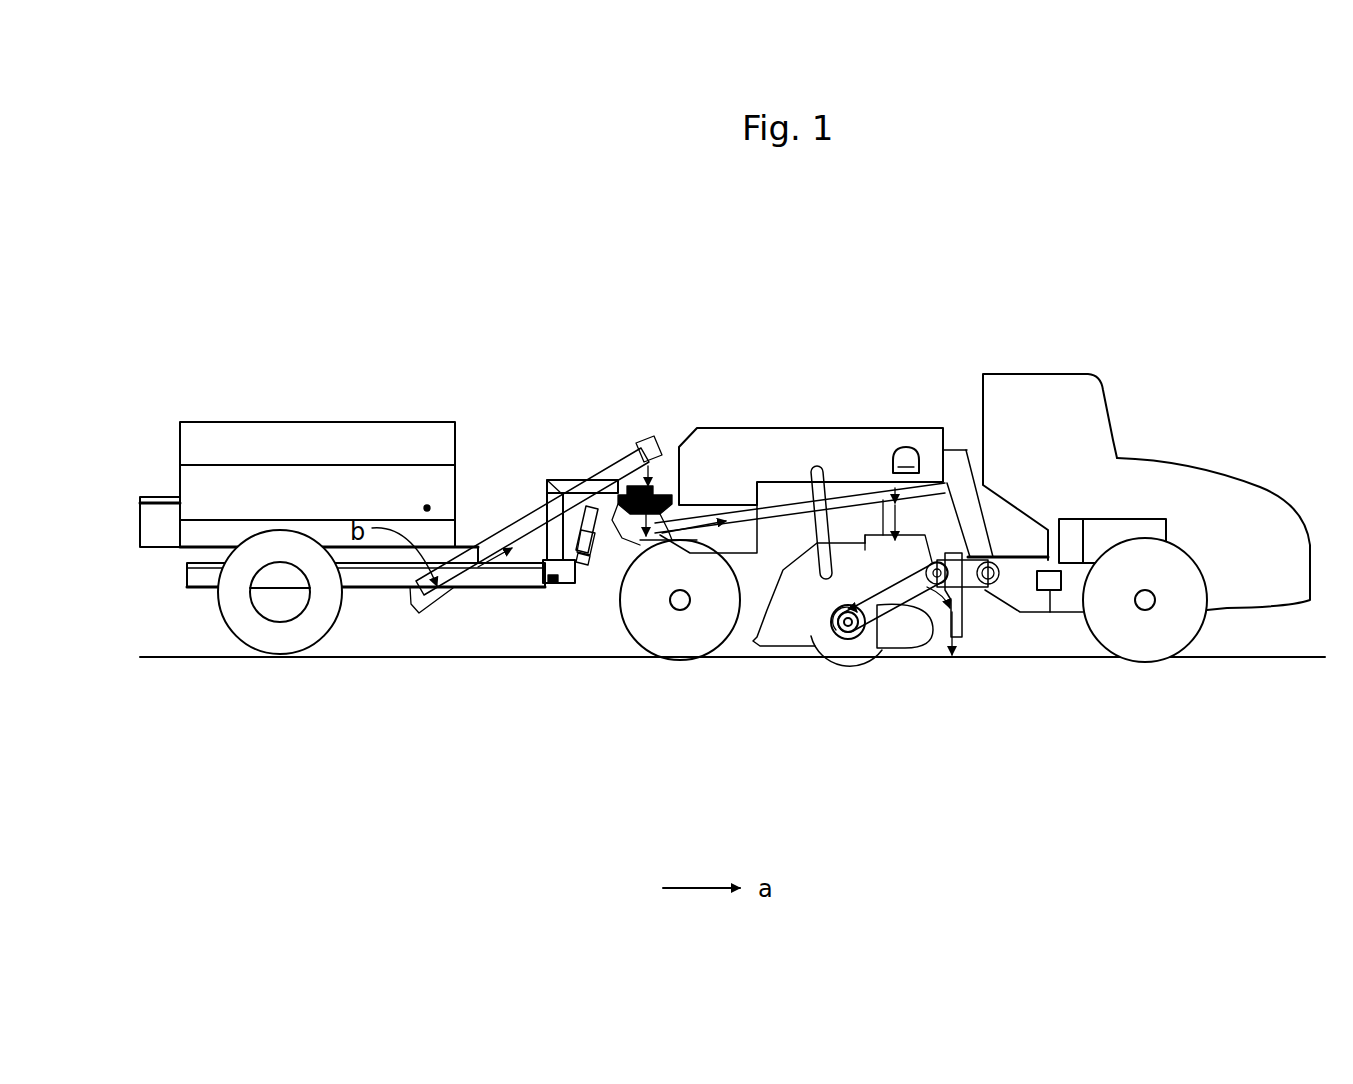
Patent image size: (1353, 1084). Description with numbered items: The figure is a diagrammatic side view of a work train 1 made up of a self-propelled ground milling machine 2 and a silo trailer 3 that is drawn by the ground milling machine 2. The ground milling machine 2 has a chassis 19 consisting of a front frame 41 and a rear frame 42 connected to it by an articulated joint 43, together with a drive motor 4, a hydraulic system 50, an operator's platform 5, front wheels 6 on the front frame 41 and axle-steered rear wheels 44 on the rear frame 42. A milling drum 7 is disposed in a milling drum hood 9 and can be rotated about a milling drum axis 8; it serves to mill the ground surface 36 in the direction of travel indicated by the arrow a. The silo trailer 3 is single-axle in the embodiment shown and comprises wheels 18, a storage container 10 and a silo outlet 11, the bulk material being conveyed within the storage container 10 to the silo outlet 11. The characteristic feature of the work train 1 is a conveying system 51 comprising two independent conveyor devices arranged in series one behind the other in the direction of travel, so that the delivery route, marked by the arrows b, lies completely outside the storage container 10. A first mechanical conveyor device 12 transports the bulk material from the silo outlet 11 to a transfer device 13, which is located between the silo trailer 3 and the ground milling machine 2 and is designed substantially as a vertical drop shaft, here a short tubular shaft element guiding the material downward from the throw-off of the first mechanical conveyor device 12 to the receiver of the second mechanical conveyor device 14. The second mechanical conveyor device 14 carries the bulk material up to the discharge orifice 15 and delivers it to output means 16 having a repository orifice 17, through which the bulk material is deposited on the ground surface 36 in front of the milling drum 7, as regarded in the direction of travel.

The work train 1 is at (733, 282).
The ground milling machine 2 is at (1135, 265).
The silo trailer 3 is at (292, 285).
The drive motor 4 is at (1100, 540).
The operator's platform 5 is at (1027, 422).
The front wheels 6 is at (1150, 635).
The milling drum 7 is at (833, 655).
The milling drum axis 8 is at (853, 632).
The milling drum hood 9 is at (912, 630).
The storage container 10 is at (350, 495).
The silo outlet 11 is at (407, 567).
The first mechanical conveyor device 12 is at (492, 567).
The transfer device 13 is at (632, 448).
The second mechanical conveyor device 14 is at (785, 487).
The discharge orifice 15 is at (885, 500).
The output means 16 is at (951, 589).
The repository orifice 17 is at (958, 613).
The wheels 18 is at (265, 635).
The chassis 19 is at (880, 435).
The ground surface 36 is at (565, 655).
The front frame 41 is at (1254, 537).
The rear frame 42 is at (700, 457).
The articulated joint 43 is at (1053, 587).
The rear wheels 44 is at (683, 640).
The hydraulic system 50 is at (1073, 527).
The conveying system 51 is at (552, 390).